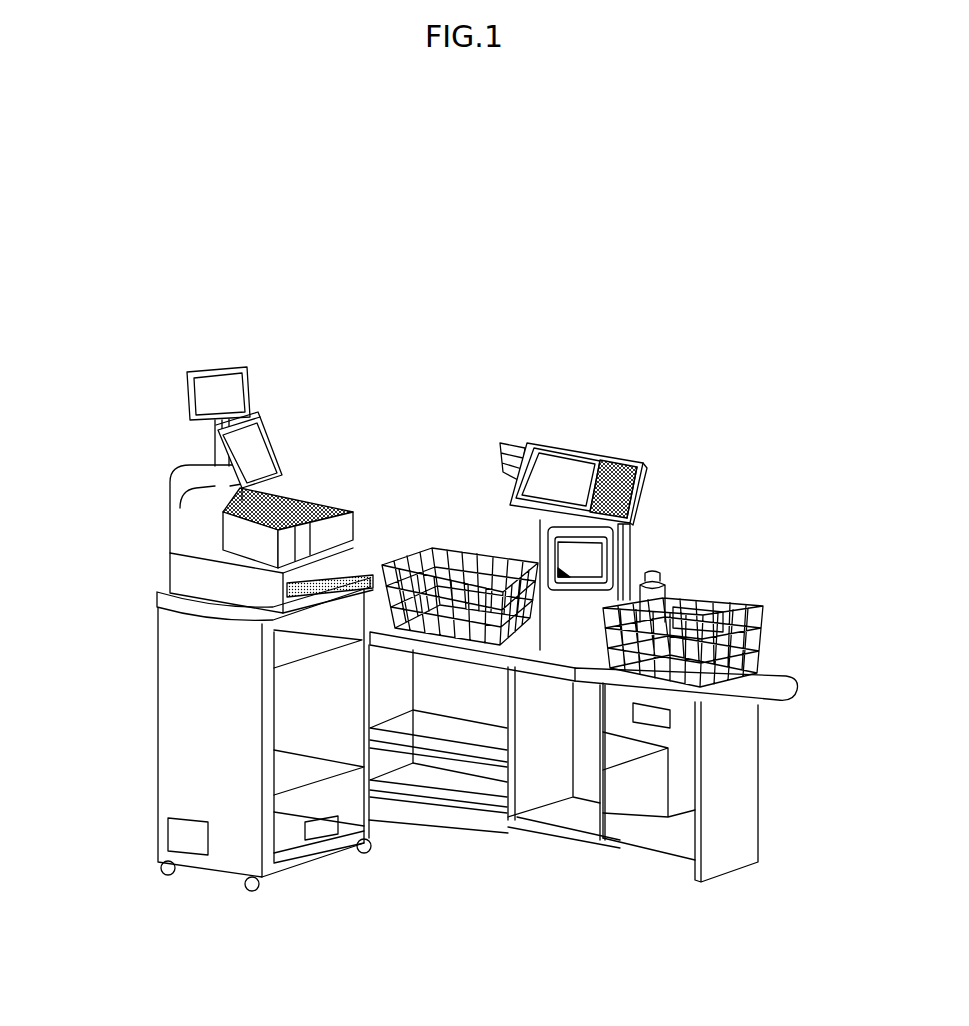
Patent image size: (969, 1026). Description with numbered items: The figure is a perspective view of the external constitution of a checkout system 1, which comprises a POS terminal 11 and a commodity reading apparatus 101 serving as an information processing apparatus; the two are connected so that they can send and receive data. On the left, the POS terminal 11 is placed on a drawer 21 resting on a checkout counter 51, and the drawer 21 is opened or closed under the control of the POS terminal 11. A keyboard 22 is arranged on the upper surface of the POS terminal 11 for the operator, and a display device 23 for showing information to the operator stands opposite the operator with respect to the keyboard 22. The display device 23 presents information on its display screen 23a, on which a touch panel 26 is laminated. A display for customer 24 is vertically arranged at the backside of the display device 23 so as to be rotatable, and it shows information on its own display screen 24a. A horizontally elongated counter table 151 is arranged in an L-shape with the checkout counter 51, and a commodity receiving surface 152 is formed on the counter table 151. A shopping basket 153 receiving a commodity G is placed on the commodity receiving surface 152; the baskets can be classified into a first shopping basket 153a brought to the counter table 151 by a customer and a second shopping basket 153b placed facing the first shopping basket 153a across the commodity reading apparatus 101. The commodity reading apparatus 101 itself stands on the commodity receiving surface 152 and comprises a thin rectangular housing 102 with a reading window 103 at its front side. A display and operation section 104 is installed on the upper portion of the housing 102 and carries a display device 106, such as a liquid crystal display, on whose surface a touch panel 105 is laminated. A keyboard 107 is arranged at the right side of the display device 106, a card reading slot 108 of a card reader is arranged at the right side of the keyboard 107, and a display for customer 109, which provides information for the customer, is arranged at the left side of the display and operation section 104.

The checkout system 1 is at (122, 392).
The POS terminal 11 is at (140, 500).
The drawer 21 is at (170, 577).
The keyboard 22 is at (332, 493).
The display device 23 is at (270, 432).
The display screen 23a is at (282, 455).
The display for customer 24 is at (218, 362).
The display screen 24a is at (202, 370).
The touch panel 26 is at (213, 452).
The checkout counter 51 is at (180, 727).
The commodity reading apparatus 101 is at (500, 347).
The housing 102 is at (560, 618).
The reading window 103 is at (563, 556).
The display and operation section 104 is at (550, 442).
The touch panel 105 is at (573, 446).
The display device 106 is at (600, 460).
The keyboard 107 is at (639, 460).
The card reading slot 108 is at (655, 458).
The display for customer 109 is at (508, 445).
The counter table 151 is at (748, 802).
The commodity receiving surface 152 is at (775, 672).
The shopping basket 153 is at (772, 590).
The first shopping basket 153a is at (770, 609).
The second shopping basket 153b is at (413, 547).
The commodity G is at (655, 579).